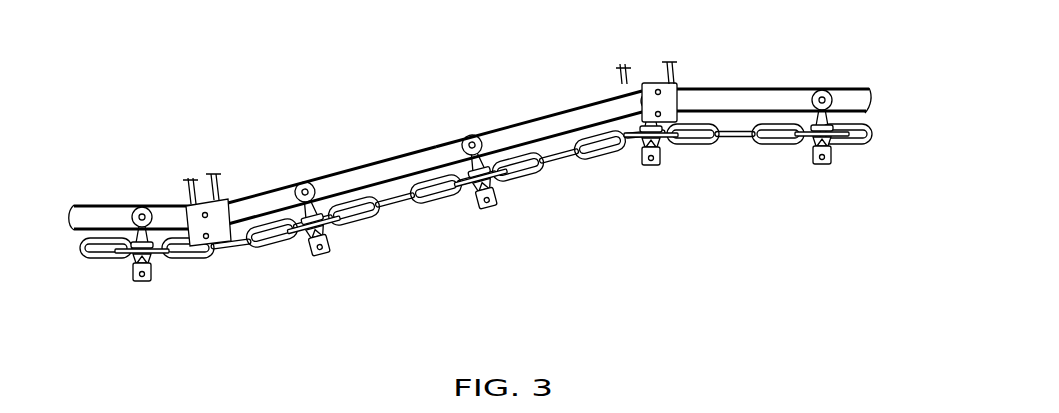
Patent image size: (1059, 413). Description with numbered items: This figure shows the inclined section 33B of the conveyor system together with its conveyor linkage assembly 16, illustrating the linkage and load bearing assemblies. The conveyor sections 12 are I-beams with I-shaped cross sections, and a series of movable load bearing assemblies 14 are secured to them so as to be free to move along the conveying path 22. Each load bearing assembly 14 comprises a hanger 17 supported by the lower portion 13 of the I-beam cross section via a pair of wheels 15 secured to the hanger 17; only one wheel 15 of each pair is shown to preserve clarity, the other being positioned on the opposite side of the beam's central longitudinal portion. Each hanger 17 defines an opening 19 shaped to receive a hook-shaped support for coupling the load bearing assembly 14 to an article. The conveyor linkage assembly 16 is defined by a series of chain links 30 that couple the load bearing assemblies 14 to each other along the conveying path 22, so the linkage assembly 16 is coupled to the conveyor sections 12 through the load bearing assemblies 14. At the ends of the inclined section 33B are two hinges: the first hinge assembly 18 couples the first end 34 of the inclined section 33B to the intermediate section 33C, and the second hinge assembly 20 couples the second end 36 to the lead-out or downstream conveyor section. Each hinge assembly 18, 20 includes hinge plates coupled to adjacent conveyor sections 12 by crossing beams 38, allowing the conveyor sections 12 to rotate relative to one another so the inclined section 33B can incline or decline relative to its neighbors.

The conveyor sections 12 is at (461, 128).
The lower portion 13 is at (80, 240).
The load bearing assemblies 14 is at (484, 196).
The wheels 15 is at (143, 207).
The conveyor linkage assembly 16 is at (458, 211).
The hangers 17 is at (152, 278).
The first hinge assembly 18 is at (236, 166).
The opening 19 is at (131, 276).
The second hinge assembly 20 is at (693, 71).
The conveying path 22 is at (77, 228).
The chain links 30 is at (353, 229).
The inclined section 33B is at (421, 131).
The intermediate section 33C is at (123, 205).
The first end 34 is at (260, 208).
The second end 36 is at (588, 121).
The crossing beam 38 is at (213, 174).